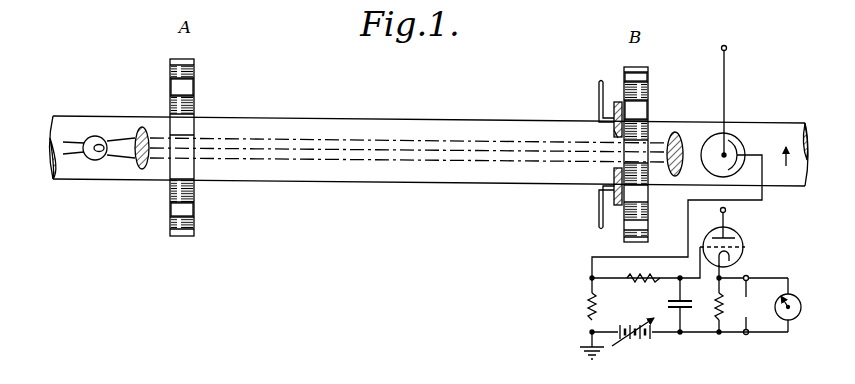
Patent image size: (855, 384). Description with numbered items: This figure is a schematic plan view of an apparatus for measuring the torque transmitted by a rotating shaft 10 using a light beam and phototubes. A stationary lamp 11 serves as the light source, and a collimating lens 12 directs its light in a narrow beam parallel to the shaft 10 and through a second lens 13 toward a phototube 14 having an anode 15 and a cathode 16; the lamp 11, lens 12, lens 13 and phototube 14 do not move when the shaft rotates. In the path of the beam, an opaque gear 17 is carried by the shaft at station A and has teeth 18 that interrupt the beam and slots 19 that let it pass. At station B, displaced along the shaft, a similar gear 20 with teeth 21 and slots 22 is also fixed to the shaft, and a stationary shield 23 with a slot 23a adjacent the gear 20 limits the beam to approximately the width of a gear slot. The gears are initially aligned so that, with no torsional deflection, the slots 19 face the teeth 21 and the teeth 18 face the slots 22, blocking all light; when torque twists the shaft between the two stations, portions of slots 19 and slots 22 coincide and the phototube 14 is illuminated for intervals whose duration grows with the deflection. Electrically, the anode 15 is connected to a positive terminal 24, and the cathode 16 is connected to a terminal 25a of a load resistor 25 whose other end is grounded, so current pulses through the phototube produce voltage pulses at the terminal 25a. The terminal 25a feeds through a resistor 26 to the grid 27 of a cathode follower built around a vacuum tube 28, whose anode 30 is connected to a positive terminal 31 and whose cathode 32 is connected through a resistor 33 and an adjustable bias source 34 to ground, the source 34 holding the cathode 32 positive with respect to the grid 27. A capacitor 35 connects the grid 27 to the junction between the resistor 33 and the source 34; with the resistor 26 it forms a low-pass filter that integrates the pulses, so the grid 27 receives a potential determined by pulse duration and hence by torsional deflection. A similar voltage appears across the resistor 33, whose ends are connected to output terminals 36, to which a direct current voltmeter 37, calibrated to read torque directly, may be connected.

The rotating shaft 10 is at (374, 127).
The lamp 11 is at (95, 136).
The collimating lens 12 is at (141, 127).
The lens 13 is at (673, 172).
The phototube 14 is at (737, 114).
The anode 15 is at (716, 140).
The cathode 16 is at (733, 144).
The gear 17 is at (178, 133).
The teeth 18 is at (178, 87).
The slots 19 is at (195, 104).
The gear 20 is at (639, 140).
The teeth 21 is at (637, 78).
The slots 22 is at (645, 128).
The stationary shield 23 is at (614, 108).
The slot 23a is at (616, 138).
The terminal 24 is at (727, 48).
The load resistor 25 is at (588, 306).
The terminal 25a is at (590, 277).
The resistor 26 is at (640, 283).
The grid 27 is at (744, 247).
The vacuum tube 28 is at (741, 235).
The anode 30 is at (729, 236).
The terminal 31 is at (720, 211).
The cathode 32 is at (731, 261).
The resistor 33 is at (718, 305).
The adjustable source of bias potential 34 is at (638, 339).
The capacitor 35 is at (668, 304).
The output terminals 36 is at (747, 318).
The direct current voltmeter 37 is at (797, 297).